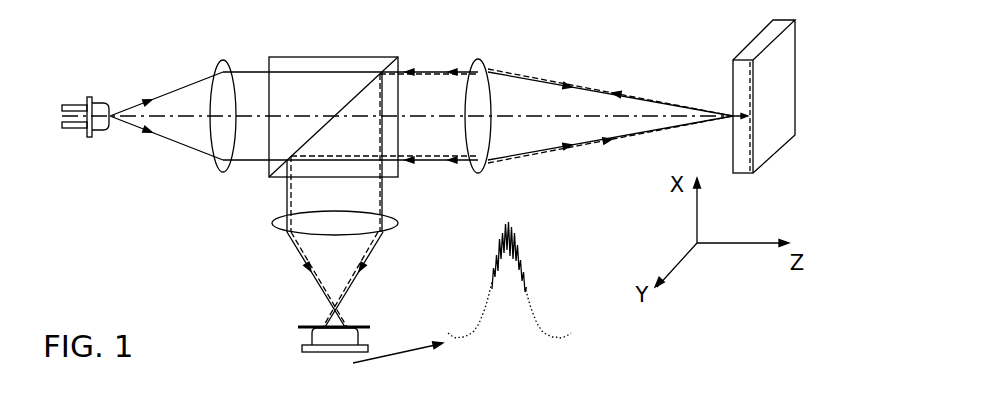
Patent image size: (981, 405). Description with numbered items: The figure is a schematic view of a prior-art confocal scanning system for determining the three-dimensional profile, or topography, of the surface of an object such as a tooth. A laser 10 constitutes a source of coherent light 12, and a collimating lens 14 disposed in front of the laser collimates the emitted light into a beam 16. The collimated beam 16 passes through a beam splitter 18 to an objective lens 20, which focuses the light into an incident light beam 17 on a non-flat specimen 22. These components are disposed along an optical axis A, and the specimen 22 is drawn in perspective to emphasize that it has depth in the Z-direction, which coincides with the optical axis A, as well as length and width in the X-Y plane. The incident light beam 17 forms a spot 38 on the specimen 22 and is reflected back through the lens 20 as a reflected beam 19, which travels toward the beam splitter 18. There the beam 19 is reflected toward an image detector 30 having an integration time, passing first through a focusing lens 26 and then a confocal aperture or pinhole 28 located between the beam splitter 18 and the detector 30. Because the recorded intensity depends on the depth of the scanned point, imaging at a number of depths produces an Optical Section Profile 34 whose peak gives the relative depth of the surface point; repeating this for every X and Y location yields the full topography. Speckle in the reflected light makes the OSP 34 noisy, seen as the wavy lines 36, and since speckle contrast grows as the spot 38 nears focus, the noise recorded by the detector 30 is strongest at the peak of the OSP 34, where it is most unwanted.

The optical axis A is at (178, 113).
The laser 10 is at (90, 137).
The coherent light 12 is at (103, 130).
The collimating lens 14 is at (223, 173).
The collimated beam 16 is at (250, 71).
The incident light beam 17 is at (533, 80).
The beam splitter 18 is at (332, 57).
The reflected beam 19 is at (632, 97).
The objective lens 20 is at (477, 60).
The specimen 22 is at (733, 148).
The focusing lens 26 is at (393, 228).
The confocal aperture or pinhole 28 is at (317, 317).
The image detector 30 is at (310, 335).
The Optical Section Profile (OSP) 34 is at (548, 318).
The wavy lines 36 is at (526, 240).
The spot 38 is at (729, 101).